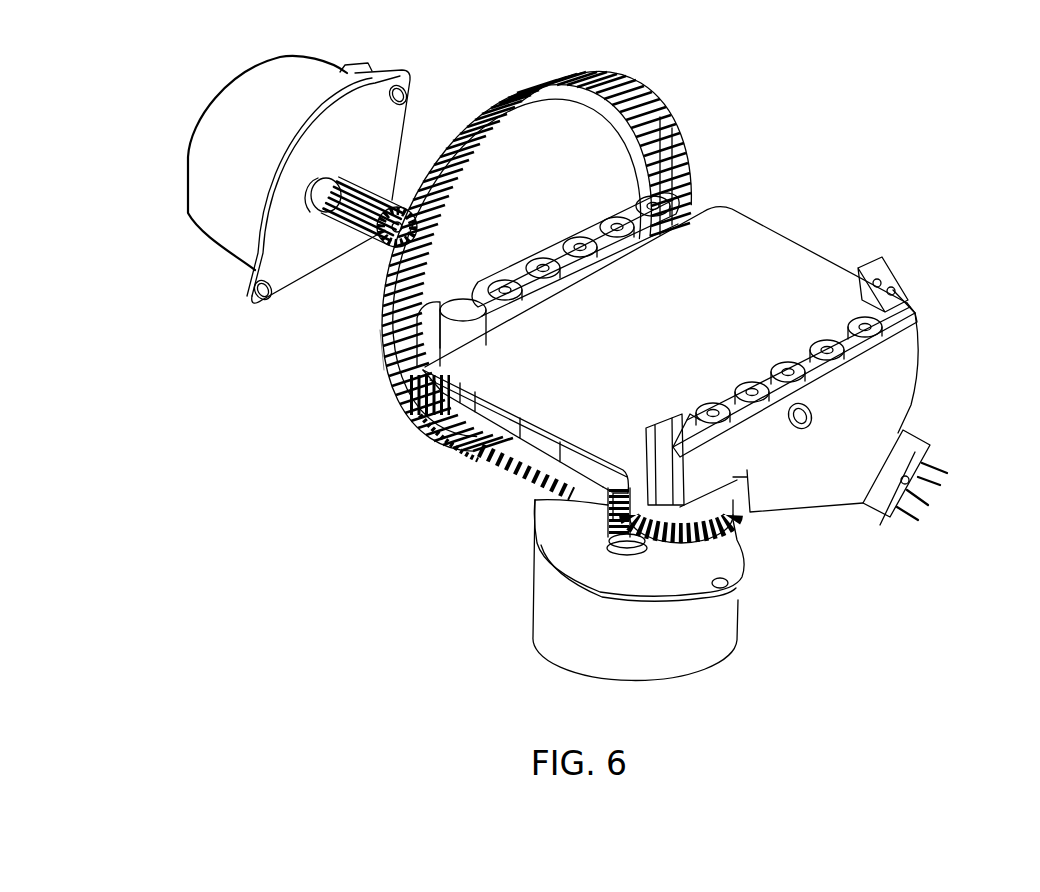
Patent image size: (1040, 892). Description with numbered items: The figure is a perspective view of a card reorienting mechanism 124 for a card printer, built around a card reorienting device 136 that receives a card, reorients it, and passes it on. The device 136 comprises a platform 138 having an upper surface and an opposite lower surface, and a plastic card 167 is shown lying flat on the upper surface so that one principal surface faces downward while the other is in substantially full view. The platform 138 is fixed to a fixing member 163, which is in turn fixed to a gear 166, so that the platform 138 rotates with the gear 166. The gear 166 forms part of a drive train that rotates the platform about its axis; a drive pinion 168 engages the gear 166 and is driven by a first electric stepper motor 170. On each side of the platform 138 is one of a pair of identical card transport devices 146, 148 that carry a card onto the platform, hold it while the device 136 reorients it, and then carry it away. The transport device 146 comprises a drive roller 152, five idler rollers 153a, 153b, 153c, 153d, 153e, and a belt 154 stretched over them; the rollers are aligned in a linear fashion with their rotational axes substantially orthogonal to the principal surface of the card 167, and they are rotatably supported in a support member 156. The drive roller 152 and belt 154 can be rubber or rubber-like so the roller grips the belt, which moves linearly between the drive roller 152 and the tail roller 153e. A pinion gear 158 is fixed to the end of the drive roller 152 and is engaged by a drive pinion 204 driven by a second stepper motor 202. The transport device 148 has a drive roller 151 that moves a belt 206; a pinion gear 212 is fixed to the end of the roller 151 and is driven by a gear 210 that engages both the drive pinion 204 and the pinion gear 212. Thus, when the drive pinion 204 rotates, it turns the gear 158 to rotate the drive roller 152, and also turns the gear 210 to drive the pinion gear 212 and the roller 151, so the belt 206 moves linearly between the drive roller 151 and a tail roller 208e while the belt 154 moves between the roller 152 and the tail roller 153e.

The card reorienting mechanism 124 is at (286, 588).
The card reorienting device 136 is at (825, 206).
The platform 138 is at (433, 428).
The card transport device 146 is at (773, 350).
The card transport device 148 is at (548, 300).
The drive roller 151 is at (467, 312).
The drive roller 152 is at (657, 415).
The idler roller 153a is at (712, 403).
The idler roller 153b is at (747, 382).
The idler roller 153c is at (788, 361).
The idler roller 153d is at (825, 339).
The tail roller 153e is at (852, 317).
The belt 154 is at (690, 414).
The support member 156 is at (897, 365).
The pinion gear 158 is at (694, 545).
The fixing member 163 is at (372, 357).
The gear 166 is at (640, 92).
The plastic card 167 is at (747, 238).
The drive pinion 168 is at (377, 195).
The first electric stepper motor 170 is at (222, 244).
The second stepper motor 202 is at (740, 600).
The drive pinion 204 is at (620, 508).
The belt 206 is at (604, 258).
The tail roller 208e is at (668, 222).
The gear 210 is at (490, 476).
The pinion gear 212 is at (400, 407).